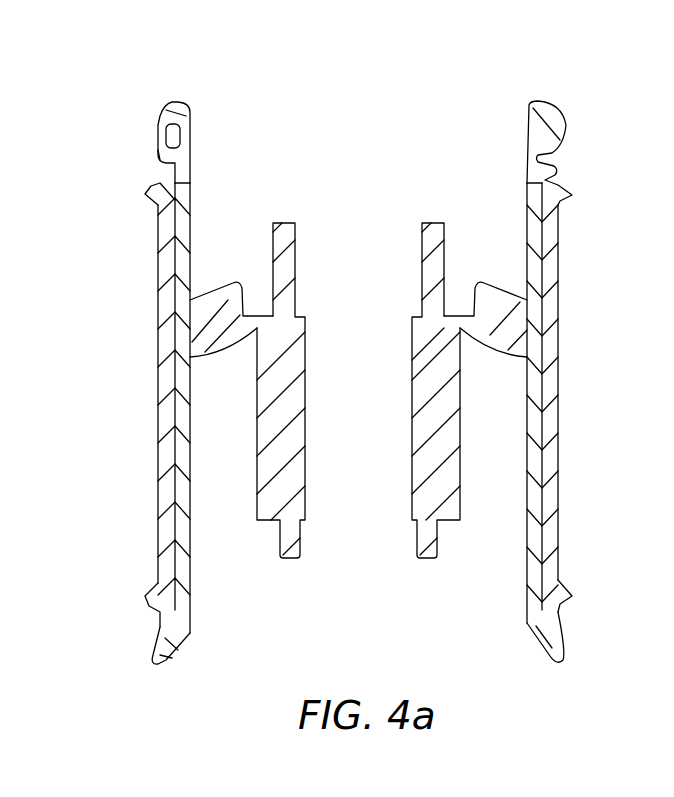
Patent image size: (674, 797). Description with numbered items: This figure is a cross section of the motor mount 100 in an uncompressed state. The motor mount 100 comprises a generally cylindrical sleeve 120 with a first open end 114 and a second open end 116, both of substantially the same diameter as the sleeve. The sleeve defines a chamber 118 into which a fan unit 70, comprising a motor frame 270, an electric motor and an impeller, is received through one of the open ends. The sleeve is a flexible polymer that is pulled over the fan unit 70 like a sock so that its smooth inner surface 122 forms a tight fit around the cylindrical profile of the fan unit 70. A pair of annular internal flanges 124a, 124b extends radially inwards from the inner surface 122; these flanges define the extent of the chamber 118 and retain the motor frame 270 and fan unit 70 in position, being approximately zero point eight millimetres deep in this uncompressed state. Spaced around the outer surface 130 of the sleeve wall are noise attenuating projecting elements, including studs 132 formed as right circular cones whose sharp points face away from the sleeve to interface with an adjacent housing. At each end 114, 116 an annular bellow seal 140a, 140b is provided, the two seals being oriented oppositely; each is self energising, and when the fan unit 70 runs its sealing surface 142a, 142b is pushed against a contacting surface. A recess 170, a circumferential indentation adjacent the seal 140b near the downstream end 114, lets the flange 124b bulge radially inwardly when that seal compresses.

The fan unit 70 is at (450, 423).
The motor mount 100 is at (578, 265).
The first open end 114 is at (568, 102).
The second open end 116 is at (138, 663).
The chamber 118 is at (371, 210).
The generally cylindrical sleeve 120 is at (168, 335).
The inner surface 122 is at (178, 262).
The flange 124a is at (532, 603).
The flange 124b is at (185, 182).
The outer surface 130 is at (158, 450).
The stud 132 is at (157, 586).
The bellow seal 140a is at (177, 647).
The bellow seal 140b is at (157, 122).
The sealing surface 142a is at (538, 650).
The sealing surface 142b is at (176, 102).
The recess 170 is at (160, 160).
The motor frame 270 is at (527, 236).